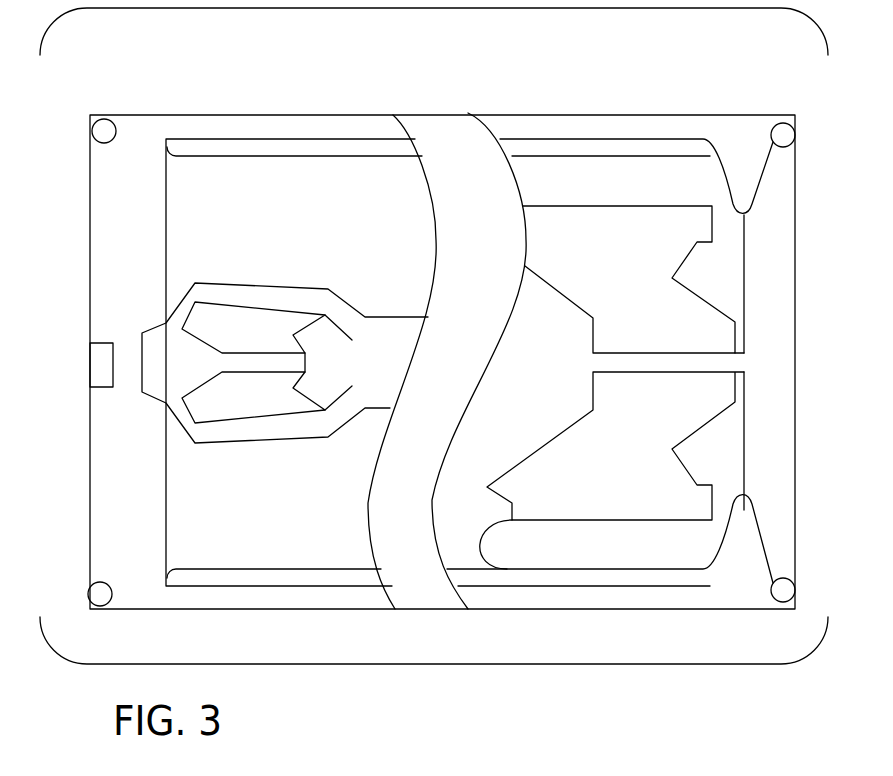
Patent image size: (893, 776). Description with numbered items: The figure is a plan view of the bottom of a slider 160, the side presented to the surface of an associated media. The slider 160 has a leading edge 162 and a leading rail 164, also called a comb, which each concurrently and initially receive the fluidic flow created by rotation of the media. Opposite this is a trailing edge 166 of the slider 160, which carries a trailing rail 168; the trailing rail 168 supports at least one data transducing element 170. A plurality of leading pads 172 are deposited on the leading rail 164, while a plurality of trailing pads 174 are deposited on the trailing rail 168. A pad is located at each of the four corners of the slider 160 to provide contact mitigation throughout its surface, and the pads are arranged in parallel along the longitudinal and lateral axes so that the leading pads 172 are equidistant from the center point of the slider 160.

The slider 160 is at (462, 669).
The leading edge 162 is at (797, 157).
The leading rail 164 is at (780, 260).
The trailing edge 166 is at (90, 150).
The trailing rail 168 is at (105, 255).
The data transducing element 170 is at (90, 373).
The leading pads 172 is at (773, 127).
The trailing pads 174 is at (111, 118).